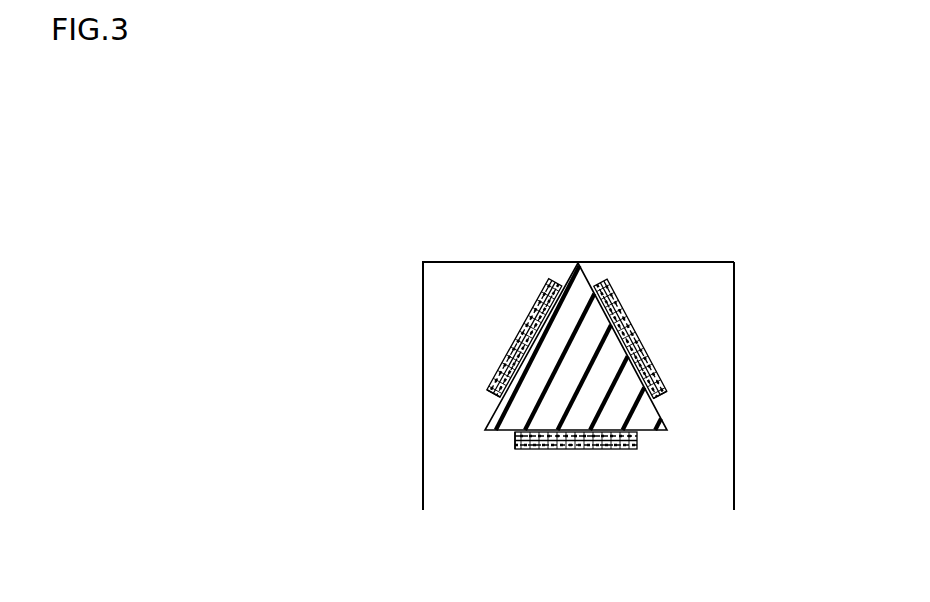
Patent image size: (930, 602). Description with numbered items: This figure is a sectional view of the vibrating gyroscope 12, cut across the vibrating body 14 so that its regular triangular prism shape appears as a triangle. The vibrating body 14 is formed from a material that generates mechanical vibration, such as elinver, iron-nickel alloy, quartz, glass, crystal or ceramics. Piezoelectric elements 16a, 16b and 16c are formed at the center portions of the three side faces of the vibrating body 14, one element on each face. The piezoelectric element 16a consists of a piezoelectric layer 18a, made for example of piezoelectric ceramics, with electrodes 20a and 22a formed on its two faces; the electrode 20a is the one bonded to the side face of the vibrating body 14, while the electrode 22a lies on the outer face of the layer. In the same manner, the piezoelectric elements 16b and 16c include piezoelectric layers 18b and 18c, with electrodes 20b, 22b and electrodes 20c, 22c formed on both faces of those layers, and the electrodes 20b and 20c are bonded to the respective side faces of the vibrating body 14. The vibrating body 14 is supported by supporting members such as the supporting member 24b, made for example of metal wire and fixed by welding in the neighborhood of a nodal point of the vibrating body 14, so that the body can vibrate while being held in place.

The vibrating gyroscope 12 is at (300, 203).
The vibrating body 14 is at (510, 420).
The piezoelectric element 16a is at (526, 300).
The piezoelectric element 16b is at (627, 299).
The piezoelectric element 16c is at (635, 459).
The piezoelectric layer 18a is at (512, 352).
The piezoelectric layer 18b is at (652, 359).
The piezoelectric layer 18c is at (568, 452).
The electrode 20a is at (494, 400).
The electrode 20b is at (652, 402).
The electrode 20c is at (520, 452).
The electrode 22a is at (523, 321).
The electrode 22b is at (635, 328).
The electrode 22c is at (620, 452).
The supporting member 24b is at (734, 325).